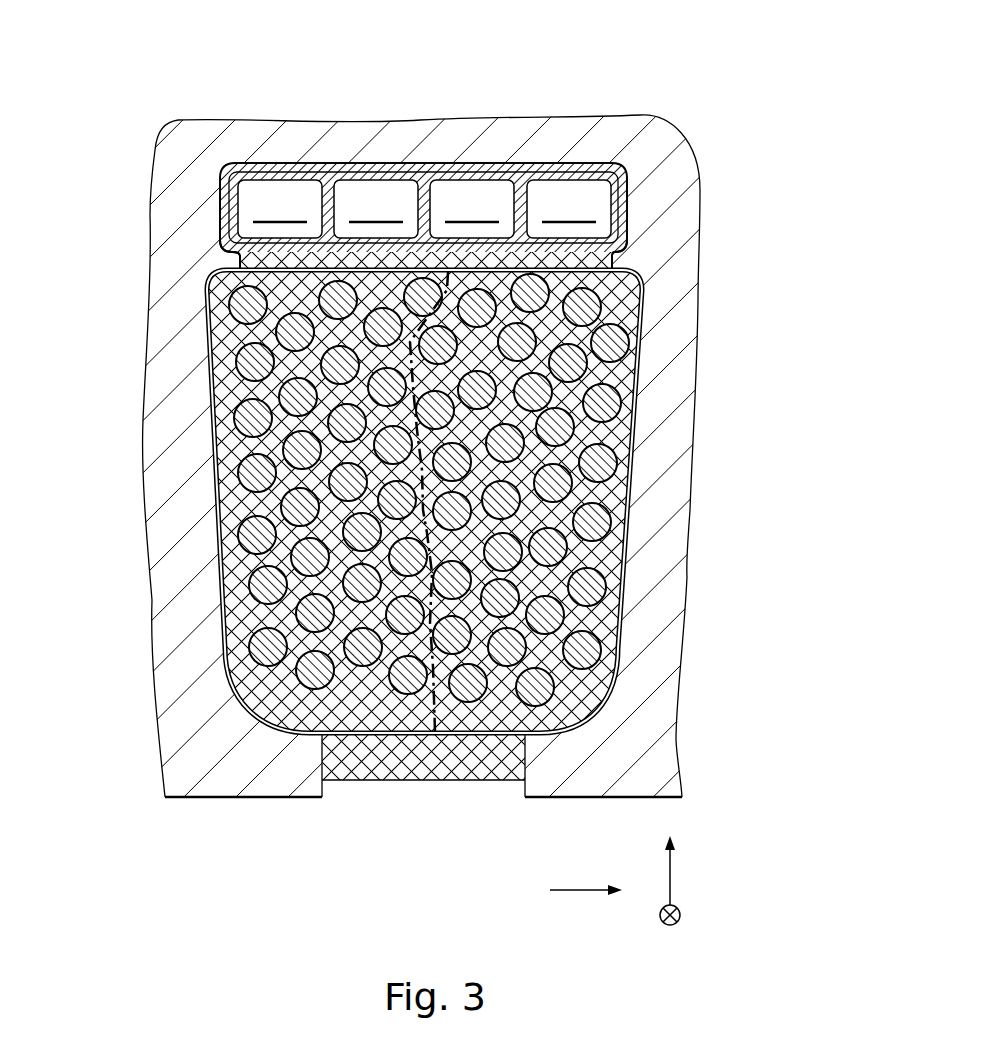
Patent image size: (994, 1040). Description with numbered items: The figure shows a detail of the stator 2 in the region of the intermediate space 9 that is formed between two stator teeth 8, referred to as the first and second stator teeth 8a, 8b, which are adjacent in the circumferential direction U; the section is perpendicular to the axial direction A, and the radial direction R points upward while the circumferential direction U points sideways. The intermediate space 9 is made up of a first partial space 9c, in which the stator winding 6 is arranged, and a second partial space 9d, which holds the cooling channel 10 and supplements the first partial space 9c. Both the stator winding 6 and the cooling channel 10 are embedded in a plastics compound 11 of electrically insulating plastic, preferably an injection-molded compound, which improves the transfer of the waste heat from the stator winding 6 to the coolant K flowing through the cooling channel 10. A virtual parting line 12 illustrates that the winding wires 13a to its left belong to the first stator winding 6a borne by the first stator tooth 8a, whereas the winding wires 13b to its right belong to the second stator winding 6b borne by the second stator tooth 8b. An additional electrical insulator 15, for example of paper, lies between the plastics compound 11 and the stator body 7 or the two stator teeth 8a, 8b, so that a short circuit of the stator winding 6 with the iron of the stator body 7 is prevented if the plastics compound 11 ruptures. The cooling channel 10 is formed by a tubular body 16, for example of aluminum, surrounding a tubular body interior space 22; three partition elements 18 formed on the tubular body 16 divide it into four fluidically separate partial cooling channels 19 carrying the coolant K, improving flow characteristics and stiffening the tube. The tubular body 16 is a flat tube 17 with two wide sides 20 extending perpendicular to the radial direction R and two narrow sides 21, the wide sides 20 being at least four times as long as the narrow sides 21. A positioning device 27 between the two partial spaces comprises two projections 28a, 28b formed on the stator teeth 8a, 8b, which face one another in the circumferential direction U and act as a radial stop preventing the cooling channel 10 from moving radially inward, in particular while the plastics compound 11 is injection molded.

The stator 2 is at (497, 482).
The stator winding 6 is at (426, 501).
The first stator winding 6a is at (213, 418).
The second stator winding 6b is at (639, 402).
The stator body 7 is at (200, 135).
The stator teeth 8 is at (419, 456).
The first stator tooth 8a is at (183, 550).
The second stator tooth 8b is at (657, 555).
The intermediate space 9 is at (418, 502).
The first partial space 9c is at (610, 497).
The second partial space 9d is at (283, 162).
The cooling channel 10 is at (424, 144).
The plastics compound 11 is at (630, 182).
The virtual parting line 12 is at (455, 762).
The winding wires 13a is at (237, 372).
The winding wires 13b is at (617, 378).
The electrical insulator 15 is at (365, 745).
The tubular body 16 is at (424, 144).
The flat tube 17 is at (575, 153).
The partition element 18 is at (328, 205).
The partial cooling channel 19 is at (252, 183).
The wide side 20 is at (422, 138).
The narrow side 21 is at (221, 210).
The tubular body interior space 22 is at (462, 173).
The positioning device 27 is at (424, 258).
The projection 28a is at (233, 262).
The projection 28b is at (617, 262).
The coolant K is at (424, 209).
The circumferential direction U is at (578, 893).
The radial direction R is at (672, 875).
The axial direction A is at (681, 917).